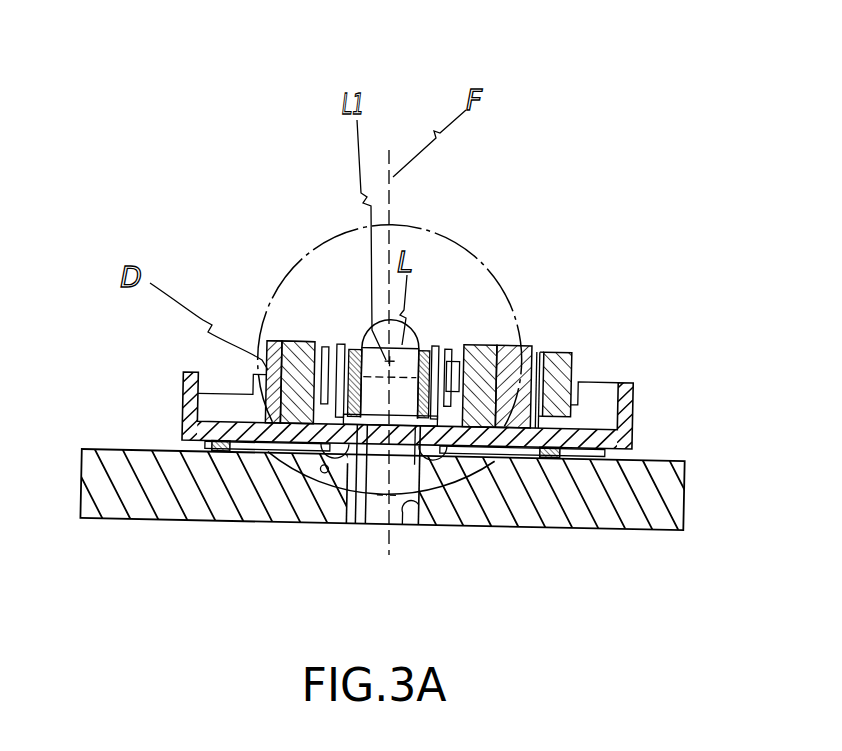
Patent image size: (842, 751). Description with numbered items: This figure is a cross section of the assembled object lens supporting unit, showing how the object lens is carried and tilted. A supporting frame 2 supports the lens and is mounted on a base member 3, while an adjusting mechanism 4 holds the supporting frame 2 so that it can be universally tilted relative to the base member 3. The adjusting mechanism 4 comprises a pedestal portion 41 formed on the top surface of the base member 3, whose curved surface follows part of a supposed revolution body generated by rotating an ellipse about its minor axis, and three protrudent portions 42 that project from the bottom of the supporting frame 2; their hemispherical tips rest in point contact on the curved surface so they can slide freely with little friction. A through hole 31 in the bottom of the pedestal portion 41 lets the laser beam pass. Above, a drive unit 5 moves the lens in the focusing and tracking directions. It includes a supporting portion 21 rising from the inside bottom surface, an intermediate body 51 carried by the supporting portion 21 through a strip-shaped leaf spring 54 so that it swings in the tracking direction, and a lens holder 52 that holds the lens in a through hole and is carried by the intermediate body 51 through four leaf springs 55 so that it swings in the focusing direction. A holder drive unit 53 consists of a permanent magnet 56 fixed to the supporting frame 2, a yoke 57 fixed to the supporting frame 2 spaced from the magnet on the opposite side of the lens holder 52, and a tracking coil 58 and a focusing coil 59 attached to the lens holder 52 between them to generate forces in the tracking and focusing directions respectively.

The supporting frame 2 is at (182, 377).
The base member 3 is at (135, 449).
The adjusting mechanism 4 is at (333, 570).
The drive unit 5 is at (195, 92).
The supporting portion 21 is at (534, 347).
The through hole 31 is at (405, 525).
The pedestal portion 41 is at (312, 497).
The protrudent portions 42 is at (300, 465).
The intermediate body 51 is at (562, 347).
The lens holder 52 is at (425, 347).
The holder drive unit 53 is at (343, 150).
The leaf spring 54 is at (544, 350).
The leaf springs 55 is at (458, 345).
The permanent magnet 56 is at (295, 340).
The yoke 57 is at (340, 340).
The tracking coil 58 is at (307, 340).
The focusing coil 59 is at (320, 340).